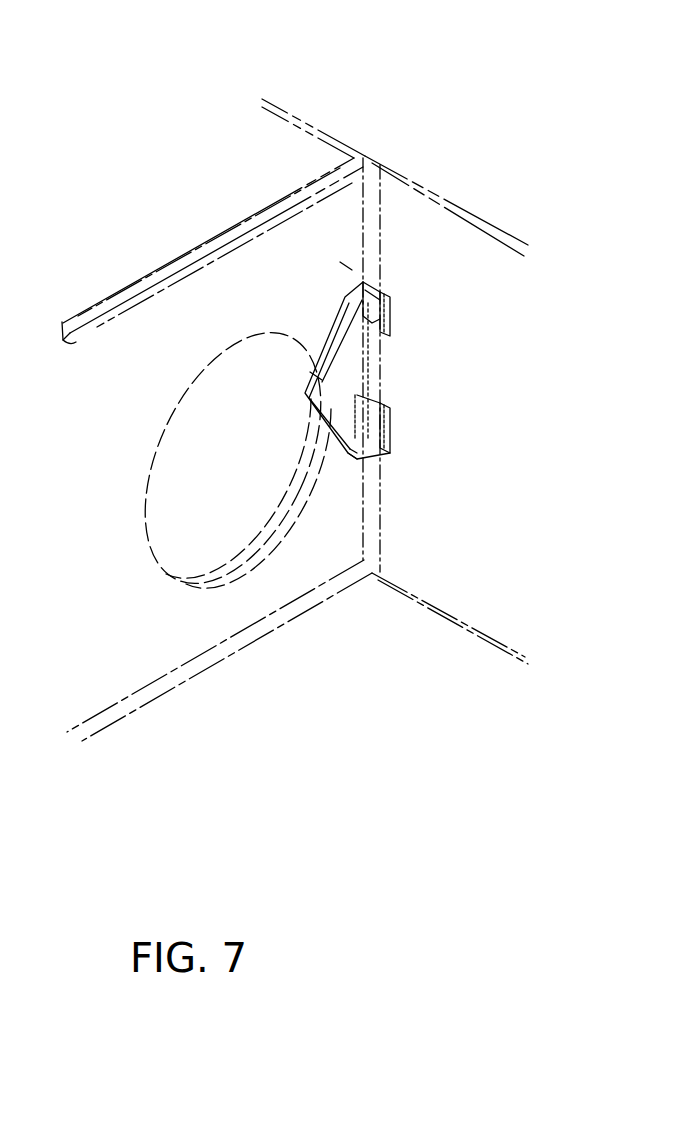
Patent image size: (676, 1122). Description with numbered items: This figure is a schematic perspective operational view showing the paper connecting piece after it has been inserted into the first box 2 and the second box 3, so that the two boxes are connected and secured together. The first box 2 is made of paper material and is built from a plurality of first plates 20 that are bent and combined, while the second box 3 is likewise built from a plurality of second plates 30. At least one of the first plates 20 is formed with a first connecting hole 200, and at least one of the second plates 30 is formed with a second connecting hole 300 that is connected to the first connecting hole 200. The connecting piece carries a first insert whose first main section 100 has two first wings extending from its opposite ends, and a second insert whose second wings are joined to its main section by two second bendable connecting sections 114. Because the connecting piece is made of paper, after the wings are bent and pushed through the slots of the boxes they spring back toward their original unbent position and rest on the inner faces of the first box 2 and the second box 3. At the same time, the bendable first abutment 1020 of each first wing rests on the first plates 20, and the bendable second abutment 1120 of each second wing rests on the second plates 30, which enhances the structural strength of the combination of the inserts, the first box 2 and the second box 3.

The first box 2 is at (215, 238).
The second box 3 is at (94, 330).
The first plates 20 is at (322, 122).
The second plates 30 is at (456, 202).
The first main section 100 is at (328, 328).
The second bendable connecting sections 114 is at (343, 430).
The bendable first abutment 1020 is at (349, 287).
The bendable second abutment 1120 is at (392, 318).
The first connecting hole 200 is at (257, 540).
The second connecting hole 300 is at (255, 560).